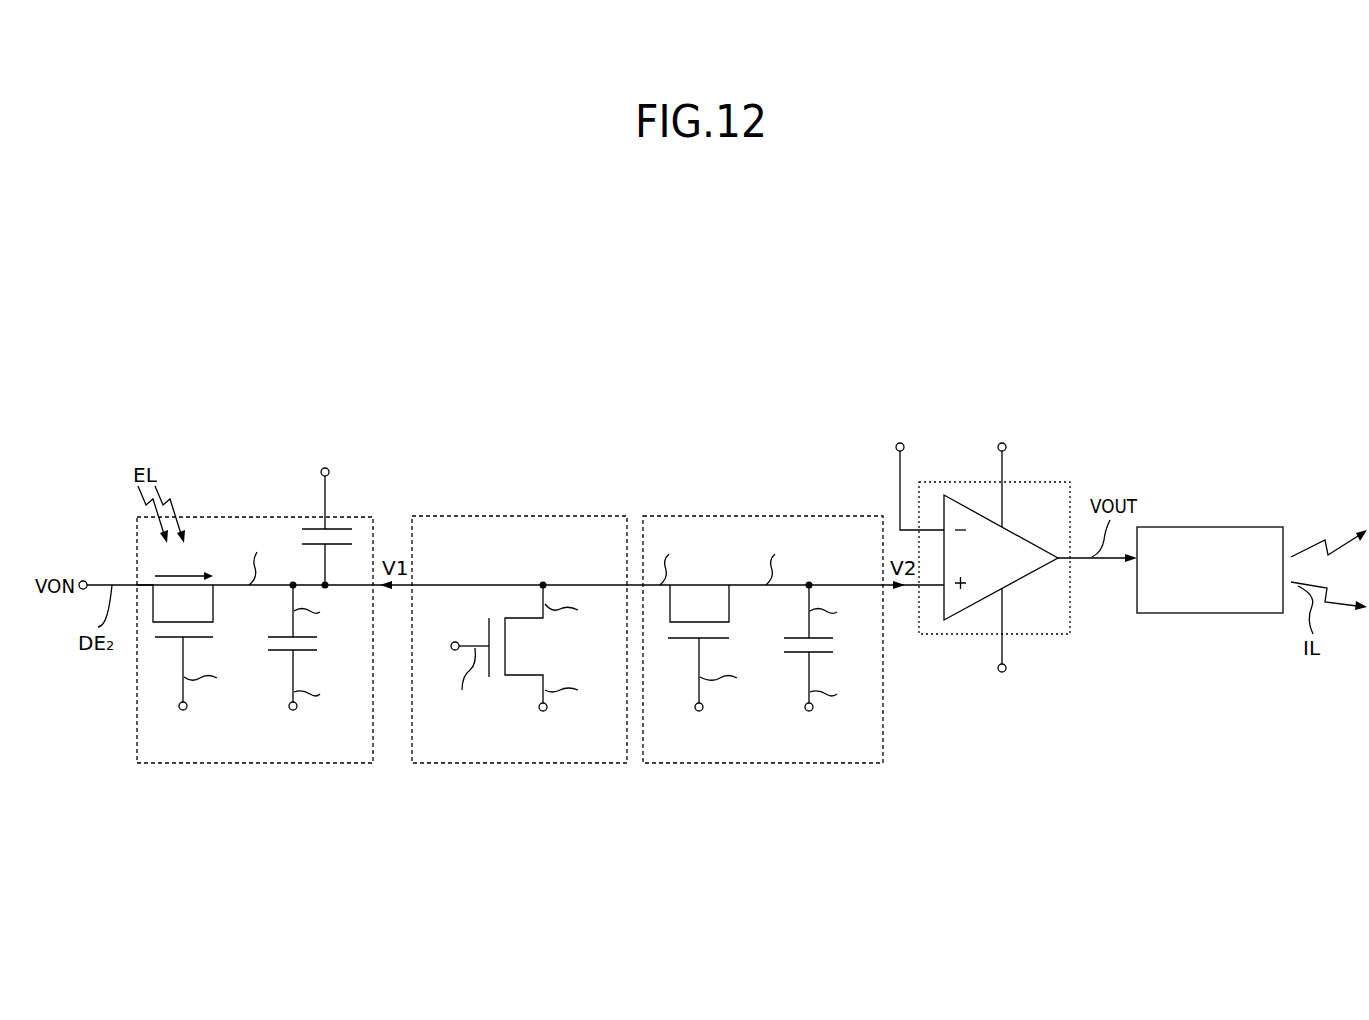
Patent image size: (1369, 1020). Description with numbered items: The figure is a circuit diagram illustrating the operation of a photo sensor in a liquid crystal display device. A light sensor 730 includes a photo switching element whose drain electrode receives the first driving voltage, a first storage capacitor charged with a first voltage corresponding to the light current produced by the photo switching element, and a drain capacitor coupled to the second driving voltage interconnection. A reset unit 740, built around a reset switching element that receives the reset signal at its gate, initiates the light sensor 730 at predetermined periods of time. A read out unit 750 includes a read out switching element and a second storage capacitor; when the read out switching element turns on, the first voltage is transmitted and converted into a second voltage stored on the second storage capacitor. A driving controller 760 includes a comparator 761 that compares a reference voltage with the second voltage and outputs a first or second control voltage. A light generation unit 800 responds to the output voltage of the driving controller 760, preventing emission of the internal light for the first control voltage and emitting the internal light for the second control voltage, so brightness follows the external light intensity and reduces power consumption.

The light sensor 730 is at (247, 517).
The reset unit 740 is at (494, 516).
The read out unit 750 is at (764, 516).
The driving controller 760 is at (1012, 559).
The comparator 761 is at (1022, 532).
The light generation unit 800 is at (1205, 527).